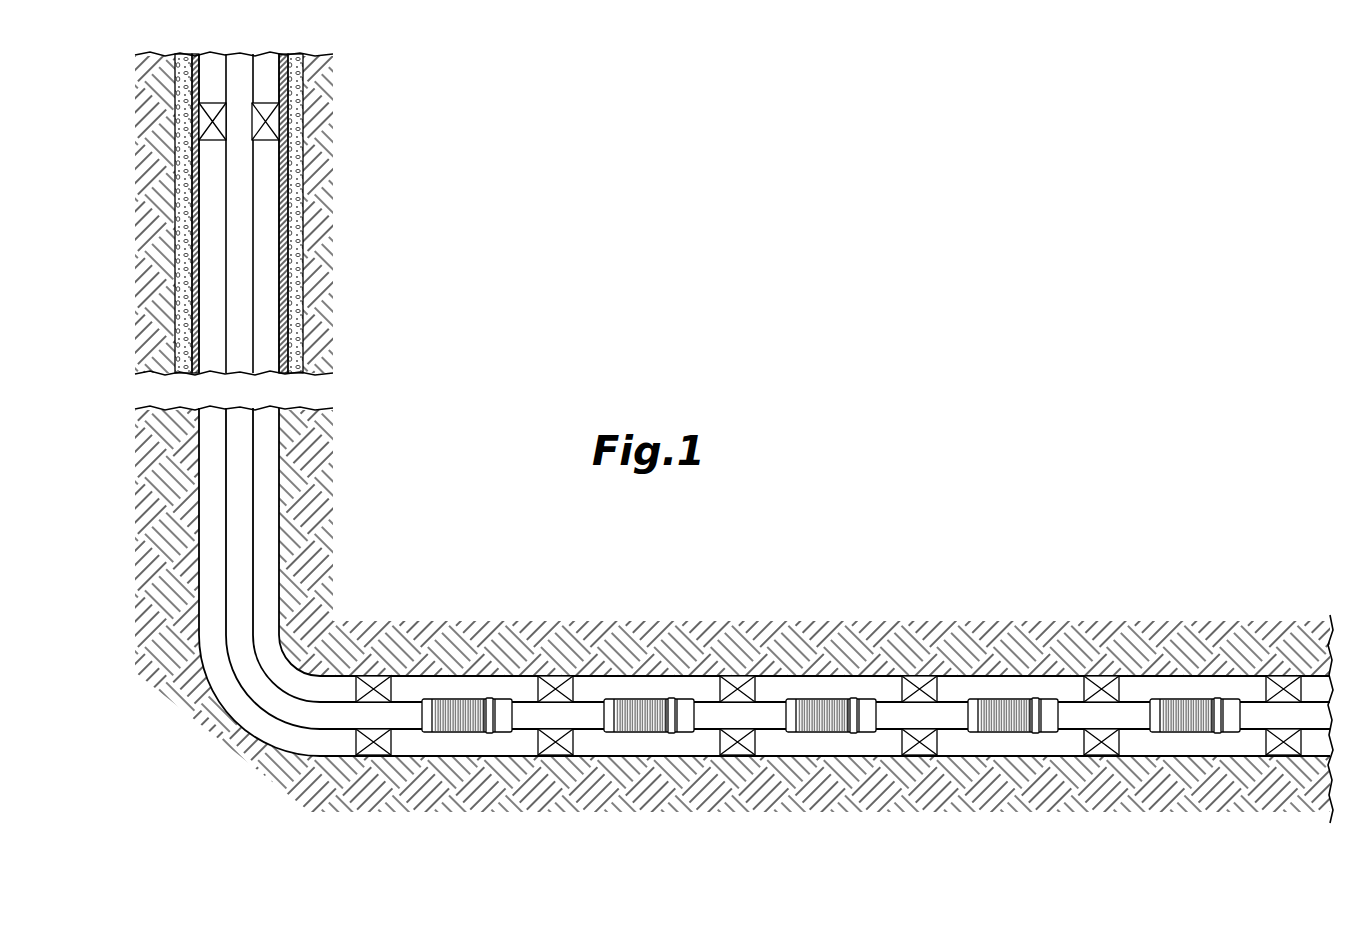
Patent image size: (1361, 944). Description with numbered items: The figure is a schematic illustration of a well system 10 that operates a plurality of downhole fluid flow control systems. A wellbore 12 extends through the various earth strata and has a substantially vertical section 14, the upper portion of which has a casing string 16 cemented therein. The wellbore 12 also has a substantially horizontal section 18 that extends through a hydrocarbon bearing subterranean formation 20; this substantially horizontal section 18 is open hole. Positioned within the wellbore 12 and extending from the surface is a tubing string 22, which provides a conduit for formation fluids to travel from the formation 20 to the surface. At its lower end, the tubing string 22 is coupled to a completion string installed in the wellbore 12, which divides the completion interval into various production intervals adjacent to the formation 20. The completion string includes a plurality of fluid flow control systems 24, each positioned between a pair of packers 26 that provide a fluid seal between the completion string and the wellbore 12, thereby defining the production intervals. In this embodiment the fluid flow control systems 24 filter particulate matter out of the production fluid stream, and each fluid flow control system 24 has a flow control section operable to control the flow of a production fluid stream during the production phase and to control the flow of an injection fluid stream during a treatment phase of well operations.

The well system 10 is at (506, 297).
The wellbore 12 is at (280, 473).
The substantially vertical section 14 is at (280, 420).
The casing string 16 is at (280, 252).
The substantially horizontal section 18 is at (652, 676).
The hydrocarbon bearing subterranean formation 20 is at (735, 658).
The tubing string 22 is at (252, 532).
The fluid flow control system 24 is at (467, 705).
The packer 26 is at (555, 682).